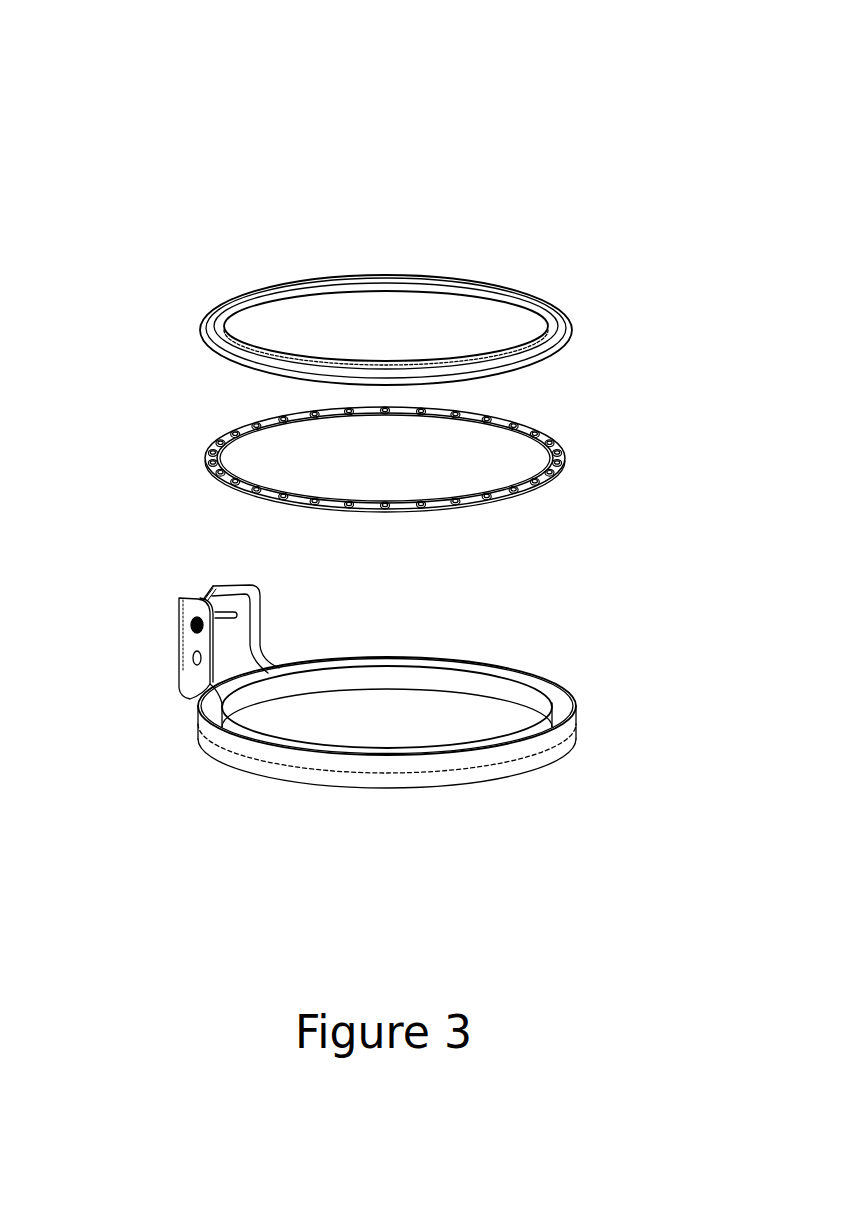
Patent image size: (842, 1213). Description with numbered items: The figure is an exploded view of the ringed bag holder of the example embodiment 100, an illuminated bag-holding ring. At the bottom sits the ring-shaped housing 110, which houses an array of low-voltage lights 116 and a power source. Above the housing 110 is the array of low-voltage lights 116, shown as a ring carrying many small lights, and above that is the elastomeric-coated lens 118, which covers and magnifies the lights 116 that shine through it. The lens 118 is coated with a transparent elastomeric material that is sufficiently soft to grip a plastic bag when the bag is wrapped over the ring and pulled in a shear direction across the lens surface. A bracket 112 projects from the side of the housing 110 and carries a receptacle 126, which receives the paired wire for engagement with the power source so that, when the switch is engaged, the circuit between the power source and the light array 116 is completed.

The embodiment 100 is at (118, 68).
The ring-shaped housing 110 is at (282, 760).
The mounting bracket 112 is at (187, 610).
The receptacle 126 is at (180, 667).
The array of low-voltage lights 116 is at (567, 456).
The elastomeric-coated lens 118 is at (567, 336).